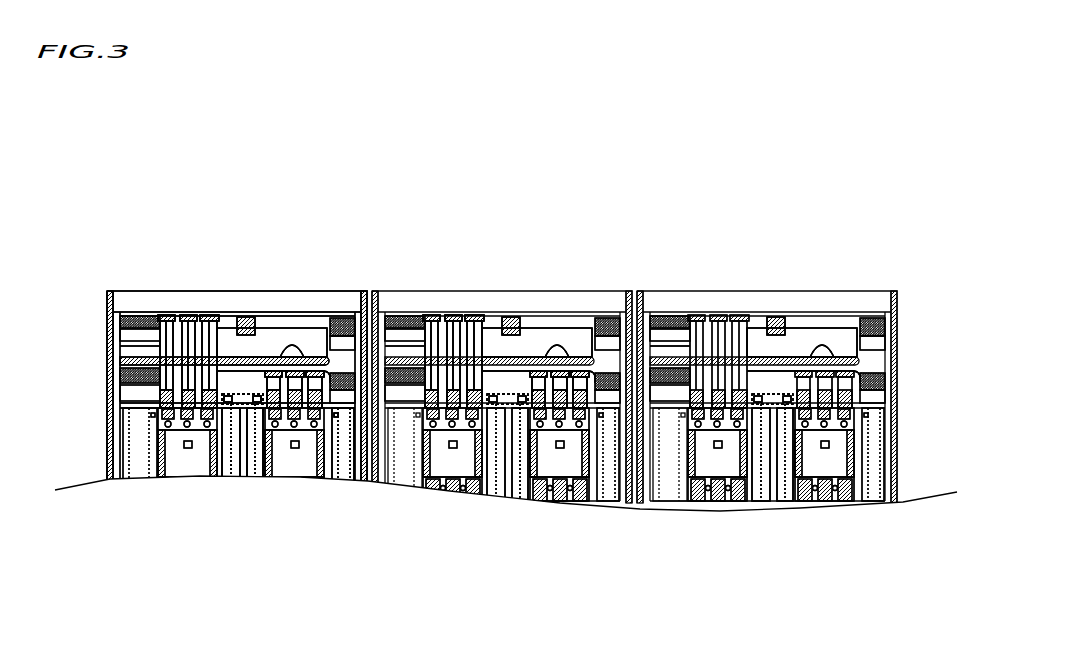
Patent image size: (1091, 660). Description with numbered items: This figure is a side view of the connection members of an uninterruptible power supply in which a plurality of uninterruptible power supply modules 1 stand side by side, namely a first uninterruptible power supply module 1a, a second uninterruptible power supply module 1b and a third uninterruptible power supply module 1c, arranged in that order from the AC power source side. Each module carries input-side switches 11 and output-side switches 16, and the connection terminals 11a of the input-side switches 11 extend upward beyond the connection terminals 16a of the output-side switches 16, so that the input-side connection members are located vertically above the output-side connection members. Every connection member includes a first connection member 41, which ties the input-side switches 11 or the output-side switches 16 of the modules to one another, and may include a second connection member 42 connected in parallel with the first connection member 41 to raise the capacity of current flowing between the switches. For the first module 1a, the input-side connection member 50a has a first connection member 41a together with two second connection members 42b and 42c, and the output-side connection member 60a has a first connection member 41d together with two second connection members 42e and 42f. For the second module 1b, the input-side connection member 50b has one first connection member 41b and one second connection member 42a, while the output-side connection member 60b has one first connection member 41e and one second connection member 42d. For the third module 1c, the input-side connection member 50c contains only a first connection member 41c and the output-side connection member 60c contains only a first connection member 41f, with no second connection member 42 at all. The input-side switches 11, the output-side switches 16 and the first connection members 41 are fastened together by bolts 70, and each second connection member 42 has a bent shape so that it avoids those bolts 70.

The uninterruptible power supply module 1 is at (502, 302).
The first uninterruptible power supply module 1a is at (244, 166).
The second uninterruptible power supply module 1b is at (564, 204).
The third uninterruptible power supply module 1c is at (702, 213).
The input-side switch 11 is at (188, 470).
The connection terminal 11a is at (123, 345).
The output-side switch 16 is at (345, 473).
The connection terminal 16a is at (355, 470).
The first connection member 41 is at (490, 425).
The first connection member 41a is at (298, 327).
The first connection member 41b is at (560, 335).
The first connection member 41c is at (765, 320).
The first connection member 41d is at (237, 480).
The first connection member 41e is at (510, 497).
The first connection member 41f is at (768, 505).
The second connection member 42 is at (373, 399).
The second connection member 42a is at (483, 335).
The second connection member 42b is at (210, 323).
The second connection member 42c is at (318, 318).
The second connection member 42d is at (567, 472).
The second connection member 42e is at (256, 478).
The second connection member 42f is at (300, 470).
The input-side connection member 50a is at (400, 213).
The input-side connection member 50b is at (590, 258).
The input-side connection member 50c is at (797, 262).
The output-side connection member 60a is at (317, 597).
The output-side connection member 60b is at (587, 583).
The output-side connection member 60c is at (805, 562).
The bolt 70 is at (842, 317).